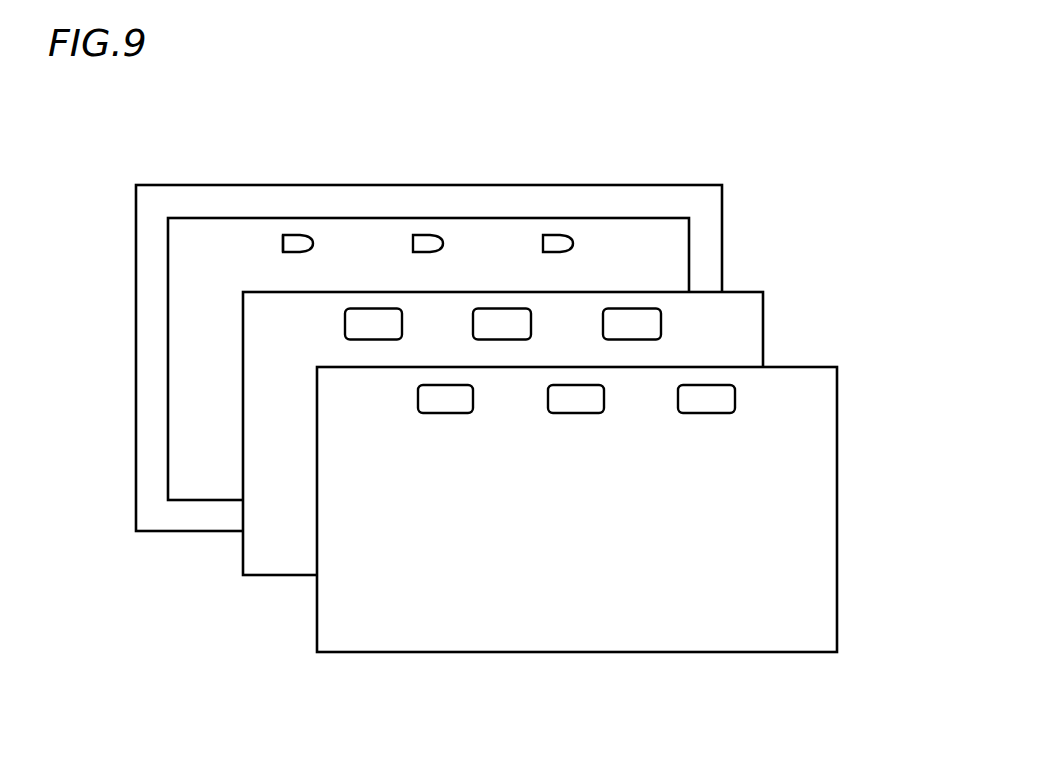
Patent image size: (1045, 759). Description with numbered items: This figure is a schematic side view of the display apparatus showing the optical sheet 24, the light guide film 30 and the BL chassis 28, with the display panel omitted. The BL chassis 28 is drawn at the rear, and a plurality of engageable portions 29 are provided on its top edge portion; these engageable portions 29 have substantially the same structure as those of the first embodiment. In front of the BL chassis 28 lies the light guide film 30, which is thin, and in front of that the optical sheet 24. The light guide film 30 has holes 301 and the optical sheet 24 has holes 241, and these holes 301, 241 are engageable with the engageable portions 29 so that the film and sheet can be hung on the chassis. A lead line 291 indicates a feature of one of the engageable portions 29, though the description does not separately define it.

The optical sheet 24 is at (828, 403).
The holes 241 is at (445, 402).
The BL chassis 28 is at (713, 246).
The engageable portions 29 is at (298, 235).
The edge of light-shielding portion 291 is at (283, 243).
The light guide film 30 is at (755, 328).
The holes 301 is at (372, 317).